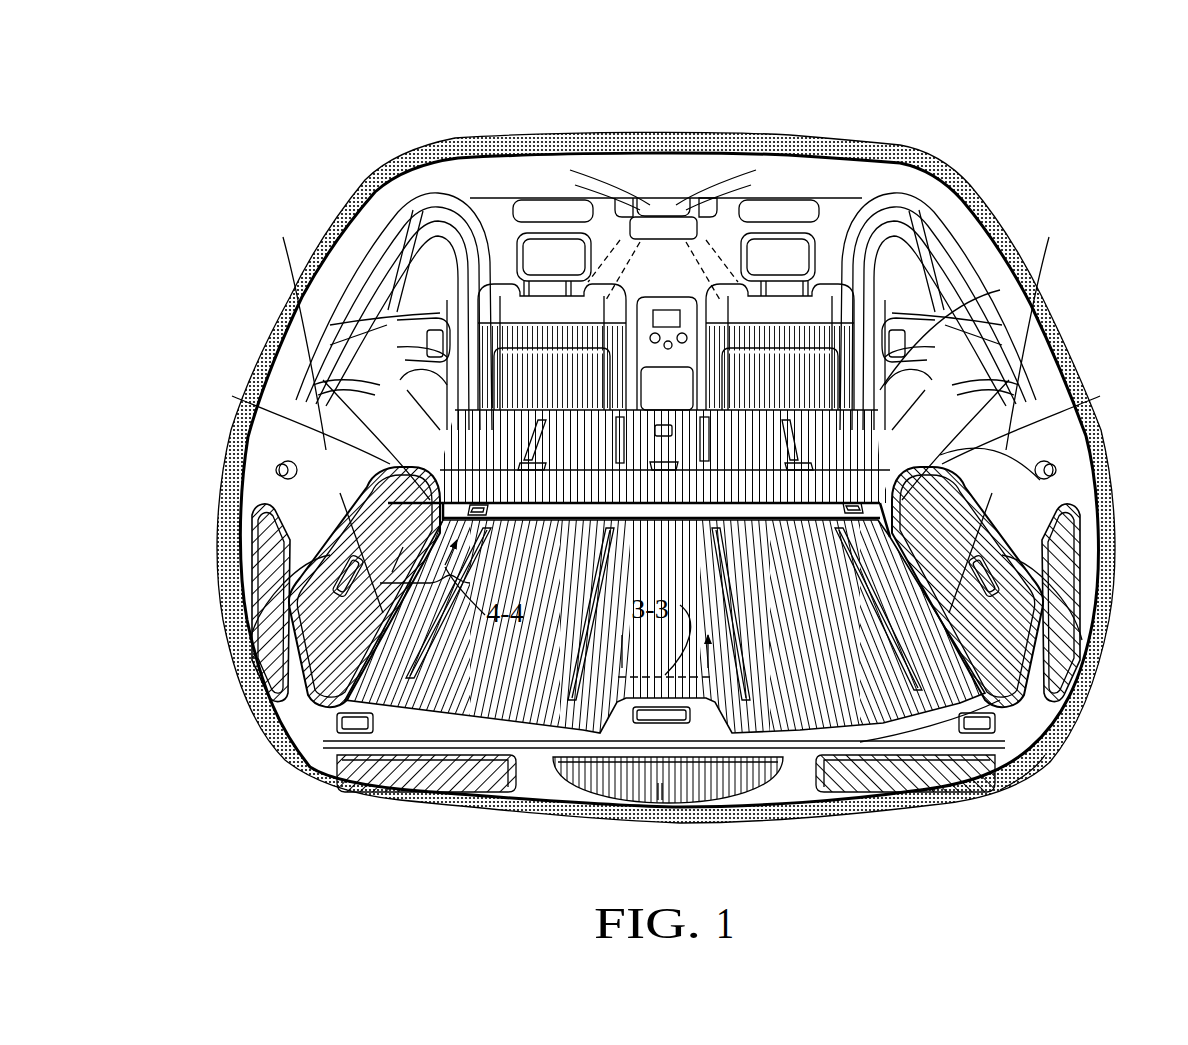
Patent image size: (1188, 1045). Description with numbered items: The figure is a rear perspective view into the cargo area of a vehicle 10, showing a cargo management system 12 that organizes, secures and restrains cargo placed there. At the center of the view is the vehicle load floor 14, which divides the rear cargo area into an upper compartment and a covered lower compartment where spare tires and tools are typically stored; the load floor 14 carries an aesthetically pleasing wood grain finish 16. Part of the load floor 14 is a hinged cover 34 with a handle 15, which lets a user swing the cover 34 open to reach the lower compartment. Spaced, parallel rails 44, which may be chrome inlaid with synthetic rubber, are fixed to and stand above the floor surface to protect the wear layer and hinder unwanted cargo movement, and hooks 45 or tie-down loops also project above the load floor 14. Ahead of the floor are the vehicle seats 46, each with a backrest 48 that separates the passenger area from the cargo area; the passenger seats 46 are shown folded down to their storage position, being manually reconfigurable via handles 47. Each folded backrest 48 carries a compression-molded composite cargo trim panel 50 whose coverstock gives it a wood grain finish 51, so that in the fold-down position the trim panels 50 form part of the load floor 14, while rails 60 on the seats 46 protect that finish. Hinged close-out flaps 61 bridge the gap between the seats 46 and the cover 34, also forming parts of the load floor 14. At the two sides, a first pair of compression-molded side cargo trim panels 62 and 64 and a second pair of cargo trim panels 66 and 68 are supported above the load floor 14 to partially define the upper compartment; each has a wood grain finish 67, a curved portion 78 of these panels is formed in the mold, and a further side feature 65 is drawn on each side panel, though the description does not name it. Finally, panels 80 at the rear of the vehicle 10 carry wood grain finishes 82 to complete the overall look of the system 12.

The vehicle 10 is at (877, 135).
The cargo management system 12 is at (880, 390).
The vehicle load floor 14 is at (1040, 785).
The handle 15 is at (670, 722).
The wood grain finish 16 is at (460, 660).
The hinged cover 34 is at (922, 725).
The rails 44 is at (590, 583).
The hooks 45 is at (483, 277).
The vehicle seats 46 is at (440, 450).
The handles 47 is at (577, 313).
The backrest 48 is at (520, 440).
The cargo trim panel 50 is at (650, 410).
The wood grain finish 51 is at (560, 330).
The rails 60 is at (478, 505).
The close-out flaps 61 is at (470, 407).
The side cargo trim panel 62 is at (280, 570).
The side cargo trim panel 64 is at (1027, 500).
The handle 65 is at (345, 577).
The cargo trim panel 66 is at (280, 462).
The wood grain finish 67 is at (350, 467).
The cargo trim panel 68 is at (973, 477).
The curved portion 78 is at (335, 717).
The panels 80 is at (458, 810).
The wood grain finish 82 is at (385, 777).